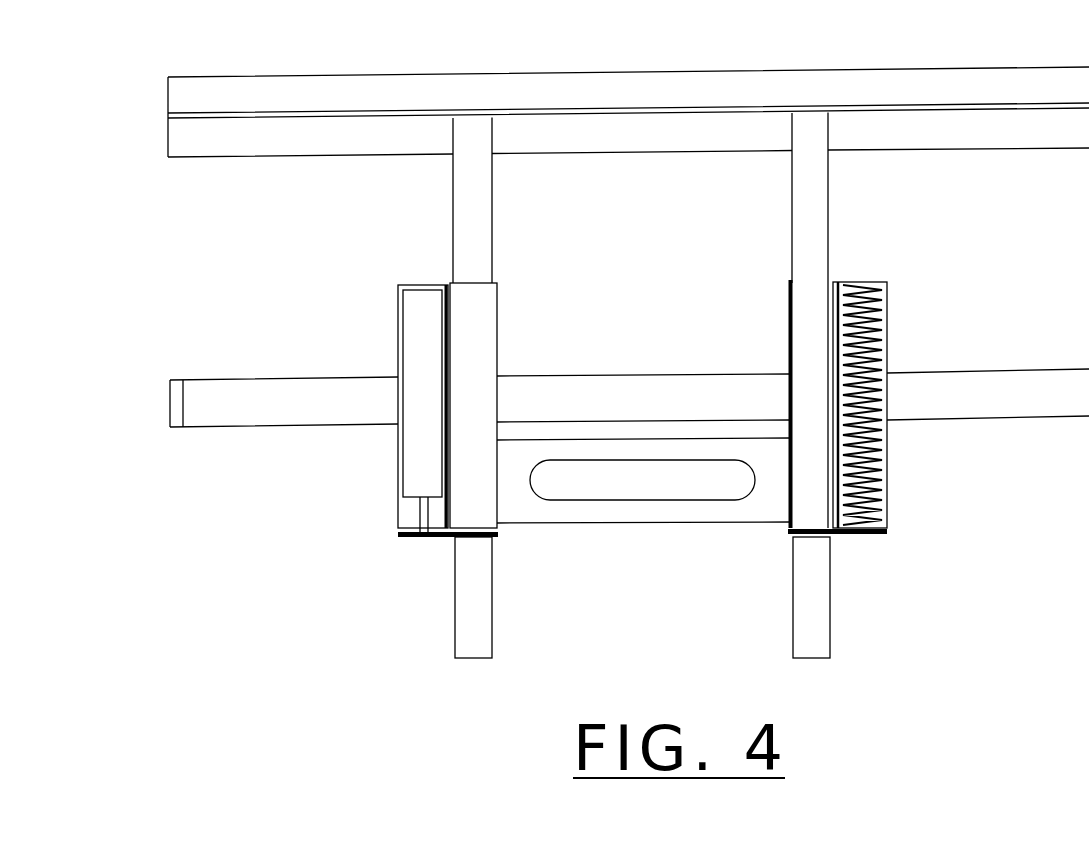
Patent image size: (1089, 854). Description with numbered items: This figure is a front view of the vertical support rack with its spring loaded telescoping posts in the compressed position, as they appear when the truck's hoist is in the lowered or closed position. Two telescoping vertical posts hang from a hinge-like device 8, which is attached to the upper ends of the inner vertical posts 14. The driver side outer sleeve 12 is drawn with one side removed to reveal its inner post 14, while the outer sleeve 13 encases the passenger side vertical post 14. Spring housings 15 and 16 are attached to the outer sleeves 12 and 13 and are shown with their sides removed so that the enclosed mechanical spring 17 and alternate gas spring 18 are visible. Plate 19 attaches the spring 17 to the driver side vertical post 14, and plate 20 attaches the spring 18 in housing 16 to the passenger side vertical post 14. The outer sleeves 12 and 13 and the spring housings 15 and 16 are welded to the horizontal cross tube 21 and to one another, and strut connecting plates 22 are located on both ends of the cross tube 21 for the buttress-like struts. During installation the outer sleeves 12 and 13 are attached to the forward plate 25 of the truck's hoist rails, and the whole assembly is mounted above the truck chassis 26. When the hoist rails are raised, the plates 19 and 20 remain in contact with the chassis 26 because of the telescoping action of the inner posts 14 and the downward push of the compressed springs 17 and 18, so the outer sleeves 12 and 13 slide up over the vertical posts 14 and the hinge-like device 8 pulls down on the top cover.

The hinge-like device 8 is at (628, 142).
The outer sleeve 12 is at (730, 394).
The outer sleeve 13 is at (541, 394).
The vertical post 14 is at (640, 321).
The spring housing 15 is at (931, 398).
The spring housing 16 is at (362, 404).
The mechanical spring 17 is at (910, 365).
The gas spring 18 is at (382, 393).
The spring push plate 19 is at (907, 504).
The spring push plate 20 is at (395, 569).
The horizontal cross tube 21 is at (629, 421).
The connecting plate 22 is at (631, 392).
The forward plate 25 is at (638, 536).
The chassis 26 is at (642, 605).